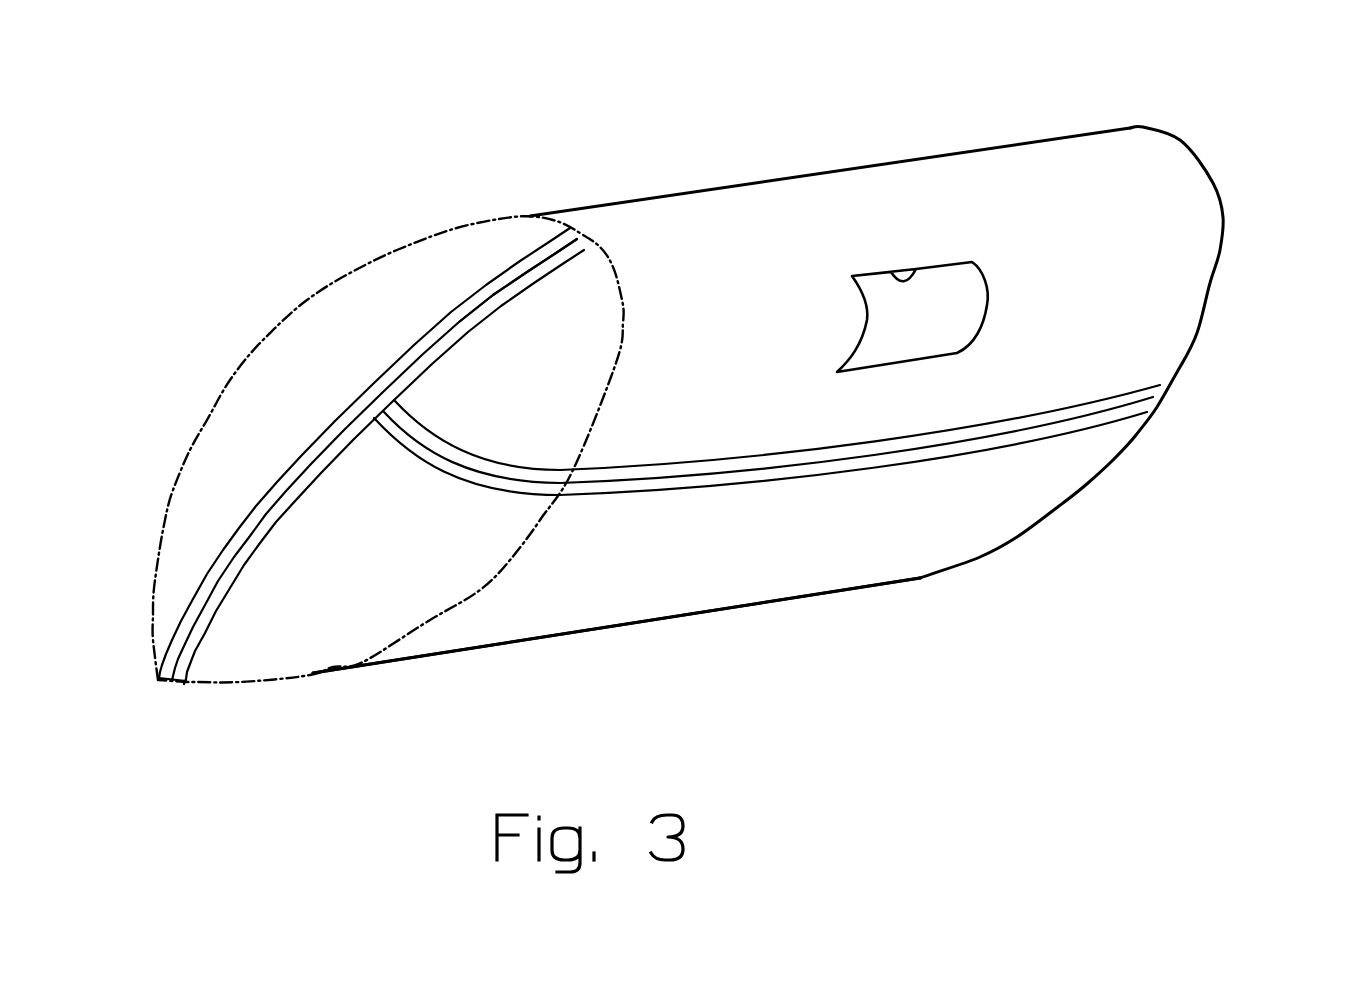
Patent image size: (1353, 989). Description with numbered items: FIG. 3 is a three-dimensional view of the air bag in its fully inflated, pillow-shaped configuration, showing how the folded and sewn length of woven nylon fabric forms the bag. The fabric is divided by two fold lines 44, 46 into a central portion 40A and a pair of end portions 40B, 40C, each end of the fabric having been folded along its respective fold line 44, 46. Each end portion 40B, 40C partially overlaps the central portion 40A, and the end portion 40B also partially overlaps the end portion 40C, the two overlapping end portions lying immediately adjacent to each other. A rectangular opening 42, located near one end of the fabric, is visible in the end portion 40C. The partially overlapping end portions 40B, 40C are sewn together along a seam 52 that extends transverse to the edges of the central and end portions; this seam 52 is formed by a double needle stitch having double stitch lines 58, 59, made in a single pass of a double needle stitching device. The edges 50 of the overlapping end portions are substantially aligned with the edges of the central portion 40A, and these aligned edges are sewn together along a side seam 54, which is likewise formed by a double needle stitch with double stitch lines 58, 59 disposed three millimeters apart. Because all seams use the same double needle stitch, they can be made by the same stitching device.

The central portion 40A is at (311, 362).
The end portion 40B is at (1000, 512).
The end portion 40C is at (1180, 296).
The rectangular opening 42 is at (918, 282).
The fold line 44 is at (710, 612).
The fold line 46 is at (1112, 158).
The edges of the overlapping end portions 50 is at (223, 550).
The seam 52 is at (1085, 433).
The seam 54 is at (512, 272).
The double stitch line 58 is at (1150, 388).
The double stitch line 59 is at (1153, 408).